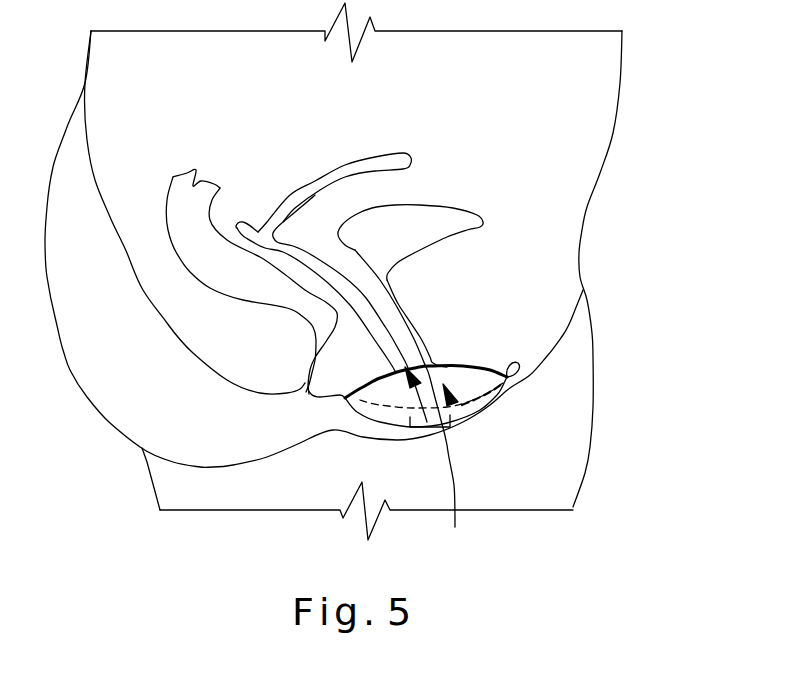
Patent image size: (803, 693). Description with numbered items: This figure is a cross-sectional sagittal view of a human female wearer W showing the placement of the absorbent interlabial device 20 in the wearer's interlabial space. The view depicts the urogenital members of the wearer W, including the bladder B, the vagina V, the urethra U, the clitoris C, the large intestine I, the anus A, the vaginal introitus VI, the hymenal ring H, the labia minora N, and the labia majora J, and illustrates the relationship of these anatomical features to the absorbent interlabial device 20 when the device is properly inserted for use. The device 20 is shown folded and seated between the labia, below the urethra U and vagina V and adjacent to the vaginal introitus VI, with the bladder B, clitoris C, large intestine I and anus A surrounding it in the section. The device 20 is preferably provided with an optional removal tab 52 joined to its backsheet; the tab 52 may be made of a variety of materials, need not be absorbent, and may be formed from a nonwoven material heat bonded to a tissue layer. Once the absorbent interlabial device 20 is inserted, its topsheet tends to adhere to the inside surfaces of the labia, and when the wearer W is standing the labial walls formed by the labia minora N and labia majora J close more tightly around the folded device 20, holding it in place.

The wearer W is at (362, 271).
The bladder B is at (496, 242).
The vagina V is at (449, 262).
The urethra U is at (502, 308).
The clitoris C is at (581, 343).
The large intestine I is at (225, 283).
The anus A is at (263, 403).
The labia minora N is at (462, 406).
The labia majora J is at (449, 431).
The hymenal ring H is at (455, 527).
The vaginal introitus VI is at (405, 435).
The absorbent interlabial device 20 is at (434, 437).
The removal tab 52 is at (380, 445).